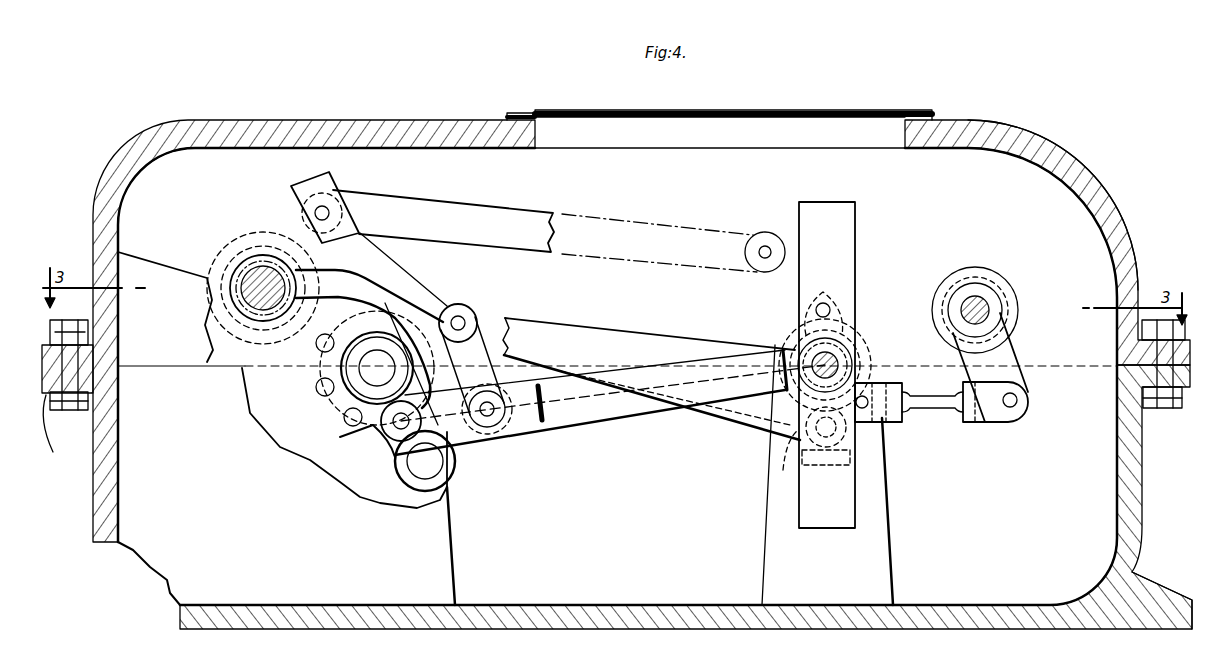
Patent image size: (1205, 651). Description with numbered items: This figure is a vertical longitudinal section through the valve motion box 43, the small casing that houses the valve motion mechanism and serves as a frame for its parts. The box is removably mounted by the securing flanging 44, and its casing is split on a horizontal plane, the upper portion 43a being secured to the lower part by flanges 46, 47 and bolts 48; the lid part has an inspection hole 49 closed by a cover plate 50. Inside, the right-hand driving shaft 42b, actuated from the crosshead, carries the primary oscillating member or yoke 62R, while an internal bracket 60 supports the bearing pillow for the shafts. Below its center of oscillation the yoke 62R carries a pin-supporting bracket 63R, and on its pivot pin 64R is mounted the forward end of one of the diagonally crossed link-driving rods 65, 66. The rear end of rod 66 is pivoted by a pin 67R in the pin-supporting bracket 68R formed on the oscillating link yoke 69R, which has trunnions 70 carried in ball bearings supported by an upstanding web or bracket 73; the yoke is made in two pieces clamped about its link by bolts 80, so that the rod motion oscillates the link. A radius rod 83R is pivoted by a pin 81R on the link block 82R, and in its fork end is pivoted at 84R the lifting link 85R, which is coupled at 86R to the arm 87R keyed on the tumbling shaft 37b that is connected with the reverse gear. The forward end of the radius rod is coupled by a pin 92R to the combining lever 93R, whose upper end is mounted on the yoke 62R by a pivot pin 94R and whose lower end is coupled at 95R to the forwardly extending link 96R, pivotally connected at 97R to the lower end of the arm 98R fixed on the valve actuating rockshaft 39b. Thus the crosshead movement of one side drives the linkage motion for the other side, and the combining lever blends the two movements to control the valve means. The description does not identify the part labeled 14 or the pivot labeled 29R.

The mounting plate 14 is at (436, 497).
The pivot pin 29R is at (398, 430).
The tumbling shaft 37b is at (252, 278).
The valve actuating rockshaft 39b is at (978, 300).
The driving shaft 42b is at (818, 358).
The valve motion box 43 is at (1132, 487).
The upper portion of the box 43a is at (1073, 152).
The securing flanging 44 is at (1153, 605).
The flange 46 is at (46, 335).
The flange 47 is at (57, 432).
The bolt 48 is at (74, 408).
The inspection hole 49 is at (742, 132).
The cover plate 50 is at (806, 109).
The internal bracket 60 is at (878, 565).
The primary oscillating member or yoke 62R is at (830, 518).
The pin-supporting bracket 63R is at (780, 475).
The pivot pin 64R is at (840, 428).
The link-driving rod 65 is at (735, 412).
The link-driving rod 66 is at (460, 210).
The pin 67R is at (328, 209).
The pin-supporting bracket 68R is at (307, 218).
The oscillating link yoke 69R is at (315, 378).
The trunnion 70 is at (370, 375).
The upstanding web or bracket 73 is at (432, 565).
The bolt 80 is at (316, 345).
The pin 81R is at (398, 436).
The link block 82R is at (414, 475).
The radius rod 83R is at (623, 400).
The pivot 84R is at (491, 414).
The lifting link 85R is at (475, 352).
The pivotal coupling 86R is at (464, 320).
The arm 87R is at (423, 285).
The pin 92R is at (848, 345).
The combining lever 93R is at (864, 398).
The pivot pin 94R is at (823, 304).
The pivotal coupling 95R is at (872, 398).
The link 96R is at (995, 423).
The pivotal connection 97R is at (1017, 400).
The arm 98R is at (1010, 350).